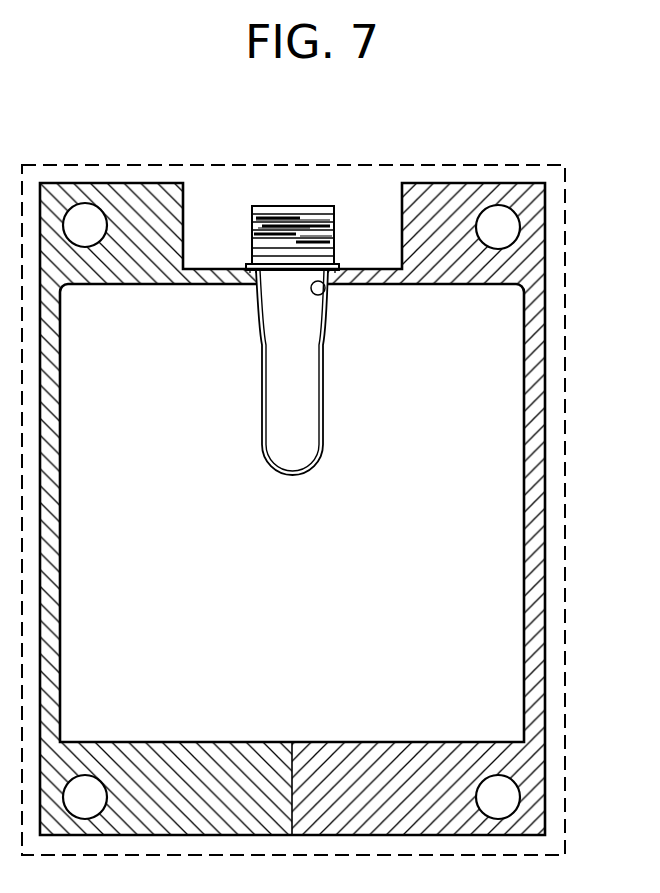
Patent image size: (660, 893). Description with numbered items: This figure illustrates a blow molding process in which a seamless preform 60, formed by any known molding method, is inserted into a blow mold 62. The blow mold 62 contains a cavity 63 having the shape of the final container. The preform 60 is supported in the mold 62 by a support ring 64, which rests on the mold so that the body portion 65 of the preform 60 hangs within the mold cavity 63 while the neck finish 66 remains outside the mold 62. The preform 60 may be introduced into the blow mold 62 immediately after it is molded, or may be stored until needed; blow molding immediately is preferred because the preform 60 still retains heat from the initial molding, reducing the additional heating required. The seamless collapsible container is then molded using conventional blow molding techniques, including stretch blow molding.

The preform 60 is at (262, 403).
The blow mold 62 is at (545, 467).
The cavity 63 is at (493, 690).
The support ring 64 is at (363, 280).
The body portion 65 is at (323, 395).
The neck finish 66 is at (322, 300).